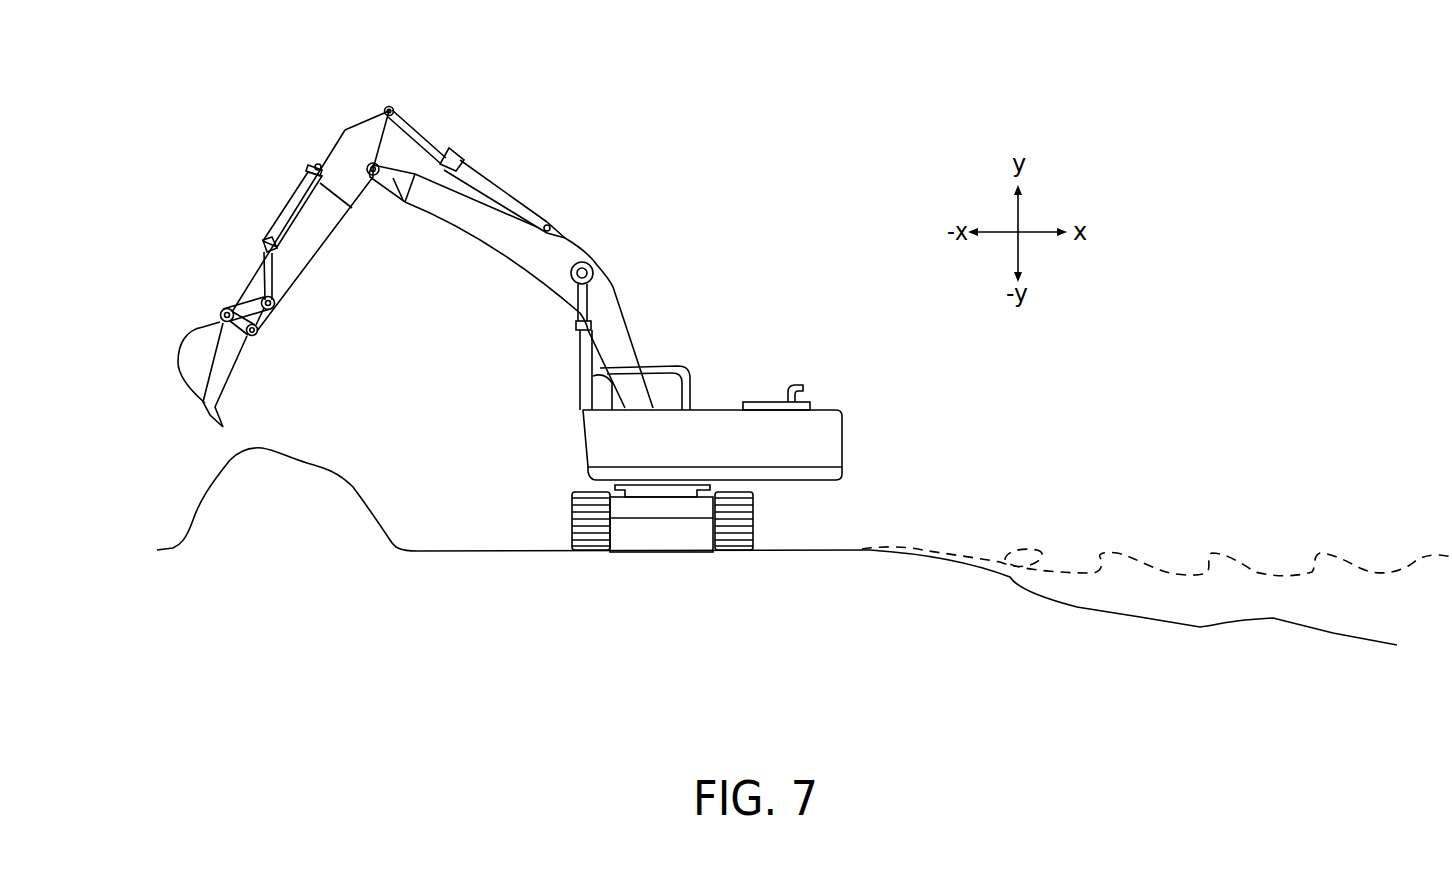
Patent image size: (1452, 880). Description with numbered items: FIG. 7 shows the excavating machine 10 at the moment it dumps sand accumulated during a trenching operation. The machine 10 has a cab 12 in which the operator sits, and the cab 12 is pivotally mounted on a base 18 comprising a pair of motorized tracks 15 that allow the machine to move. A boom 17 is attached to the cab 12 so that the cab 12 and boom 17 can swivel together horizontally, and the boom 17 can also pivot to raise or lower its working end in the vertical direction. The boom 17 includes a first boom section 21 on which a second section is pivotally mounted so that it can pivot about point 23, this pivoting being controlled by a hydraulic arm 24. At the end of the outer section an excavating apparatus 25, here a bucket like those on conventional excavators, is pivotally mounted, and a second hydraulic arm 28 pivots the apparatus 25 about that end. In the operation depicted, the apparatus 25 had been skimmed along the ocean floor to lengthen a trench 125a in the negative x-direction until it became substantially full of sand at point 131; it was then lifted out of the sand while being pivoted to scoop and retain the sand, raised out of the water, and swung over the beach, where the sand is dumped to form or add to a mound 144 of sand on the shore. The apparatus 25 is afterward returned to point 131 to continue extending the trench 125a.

The excavating machine 10 is at (740, 261).
The cab 12 is at (679, 364).
The motorized tracks 15 is at (571, 519).
The boom 17 is at (197, 248).
The base 18 is at (764, 532).
The boom section 21 is at (492, 253).
The pivot point 23 is at (317, 219).
The hydraulic arm 24 is at (505, 188).
The excavating apparatus 25 is at (178, 354).
The hydraulic arm 28 is at (291, 208).
The point 131 is at (1022, 572).
The mound 144 is at (330, 478).
The trench 125a is at (1122, 605).